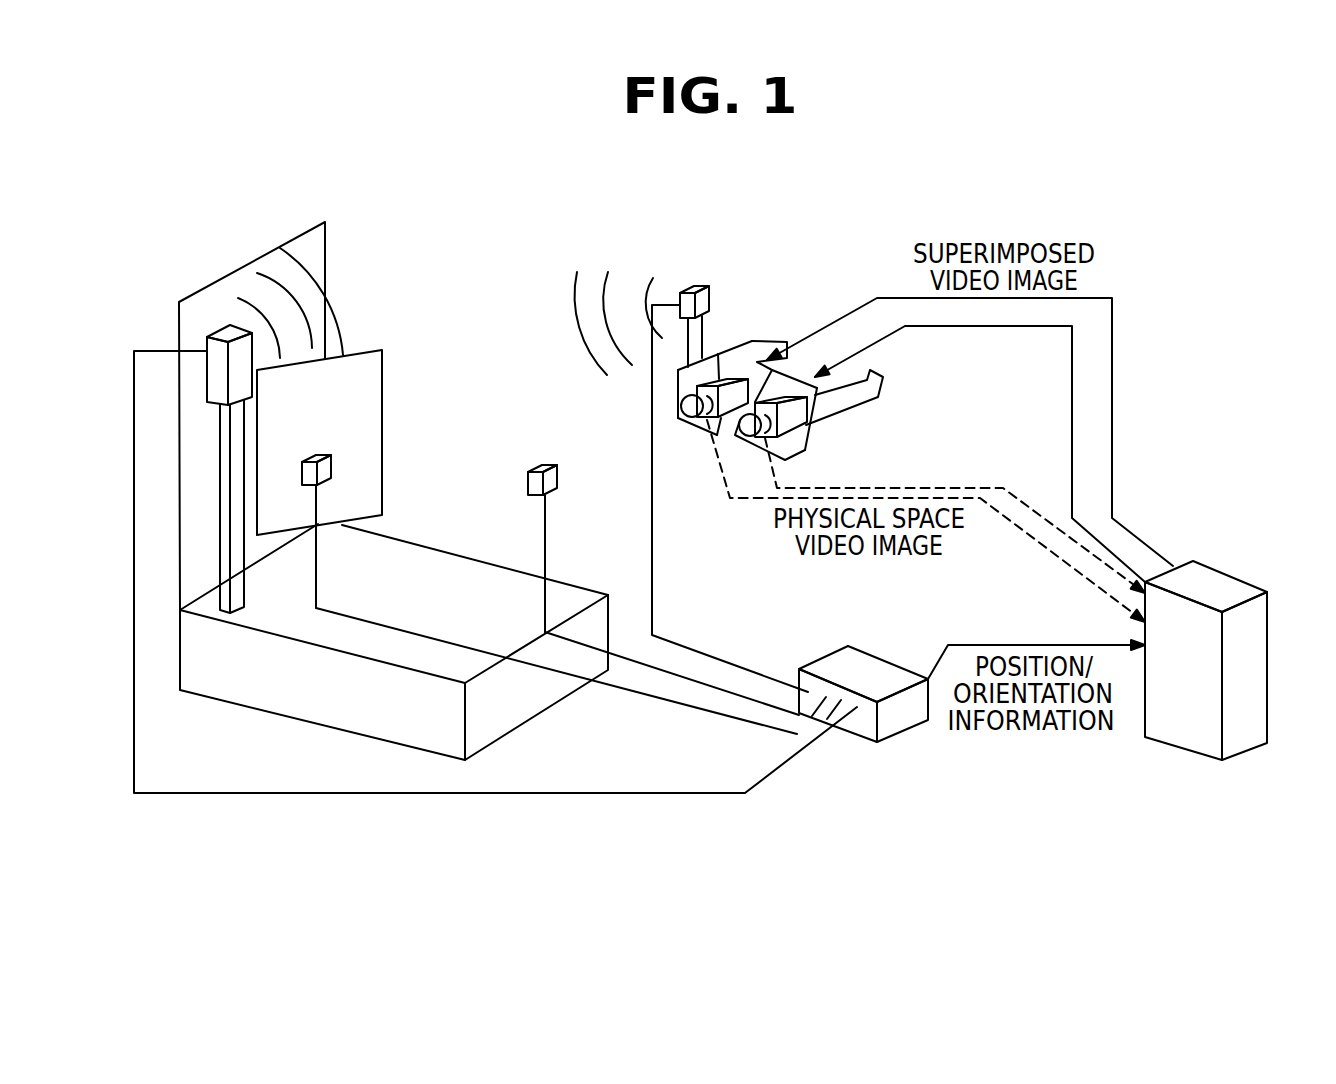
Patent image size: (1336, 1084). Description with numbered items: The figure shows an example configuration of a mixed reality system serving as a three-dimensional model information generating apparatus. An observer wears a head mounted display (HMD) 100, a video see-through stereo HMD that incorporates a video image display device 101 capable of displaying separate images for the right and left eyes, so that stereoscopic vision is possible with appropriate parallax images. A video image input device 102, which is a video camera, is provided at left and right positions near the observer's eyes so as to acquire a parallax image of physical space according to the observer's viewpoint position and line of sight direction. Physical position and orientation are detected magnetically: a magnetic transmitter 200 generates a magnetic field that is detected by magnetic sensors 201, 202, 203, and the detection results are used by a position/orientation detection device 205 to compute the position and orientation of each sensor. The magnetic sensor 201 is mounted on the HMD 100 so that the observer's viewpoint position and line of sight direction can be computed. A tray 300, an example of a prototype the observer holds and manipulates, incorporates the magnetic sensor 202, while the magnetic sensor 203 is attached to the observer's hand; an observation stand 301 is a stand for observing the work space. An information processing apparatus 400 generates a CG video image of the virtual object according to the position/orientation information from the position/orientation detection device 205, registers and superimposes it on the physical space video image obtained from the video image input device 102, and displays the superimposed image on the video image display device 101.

The head mounted display (HMD) 100 is at (818, 424).
The video image display device 101 is at (748, 340).
The video image input device 102 is at (694, 411).
The magnetic transmitter 200 is at (218, 332).
The magnetic sensor 201 is at (700, 288).
The magnetic sensor 202 is at (333, 468).
The magnetic sensor 203 is at (528, 488).
The position/orientation detection device 205 is at (898, 740).
The tray 300 is at (370, 352).
The observation stand 301 is at (298, 237).
The information processing apparatus 400 is at (1208, 578).